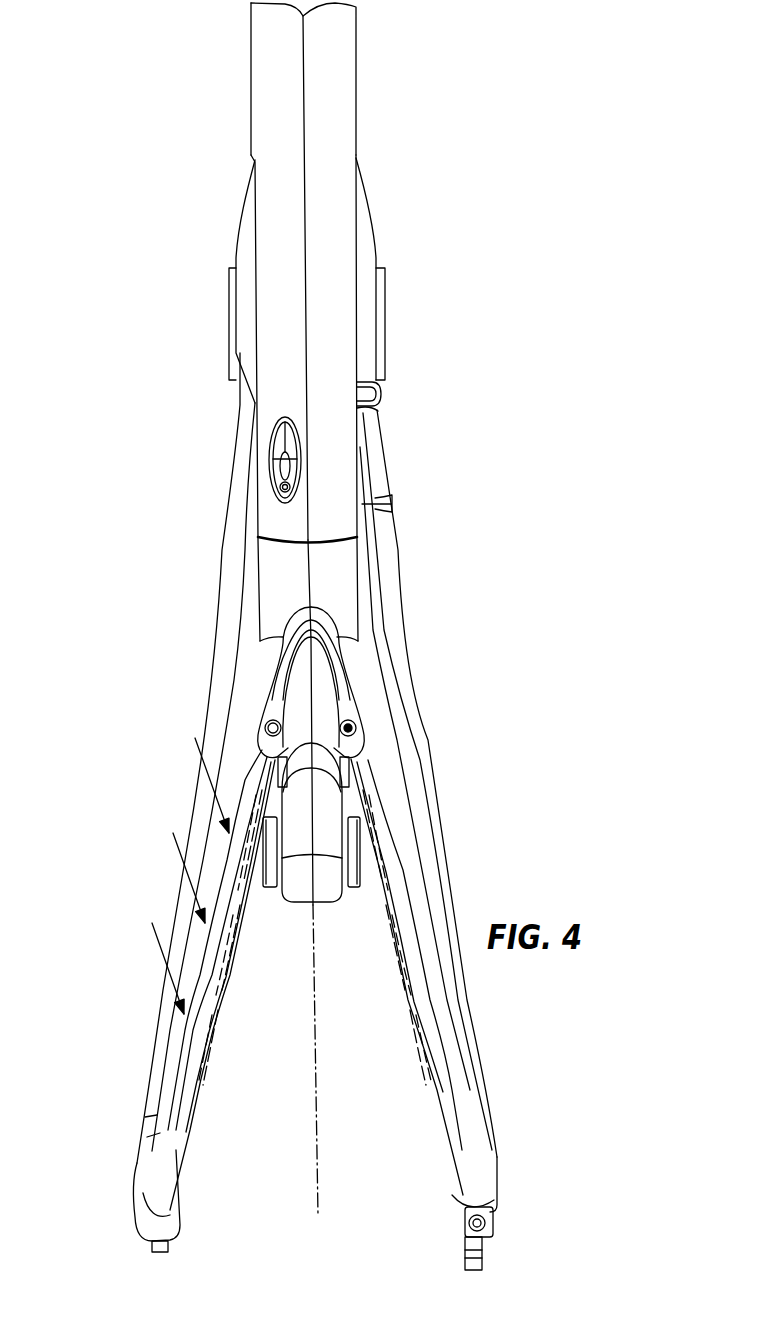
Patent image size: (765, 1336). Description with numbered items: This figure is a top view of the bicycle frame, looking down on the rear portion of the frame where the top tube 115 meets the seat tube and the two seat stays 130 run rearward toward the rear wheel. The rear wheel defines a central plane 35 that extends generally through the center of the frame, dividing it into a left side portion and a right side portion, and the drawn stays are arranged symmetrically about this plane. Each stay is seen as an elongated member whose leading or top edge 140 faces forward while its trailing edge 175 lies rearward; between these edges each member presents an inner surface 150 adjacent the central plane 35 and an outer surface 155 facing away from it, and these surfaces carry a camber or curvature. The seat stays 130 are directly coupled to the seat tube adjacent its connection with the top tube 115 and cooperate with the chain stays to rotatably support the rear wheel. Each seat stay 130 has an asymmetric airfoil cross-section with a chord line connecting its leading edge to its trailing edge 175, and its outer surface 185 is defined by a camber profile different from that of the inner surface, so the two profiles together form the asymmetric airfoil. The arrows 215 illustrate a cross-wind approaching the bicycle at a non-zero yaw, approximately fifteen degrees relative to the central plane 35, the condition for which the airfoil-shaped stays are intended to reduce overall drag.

The top tube 115 is at (340, 85).
The outer surface 155 is at (235, 575).
The leading or top edge 140 is at (232, 680).
The inner surface 150 is at (238, 727).
The trailing edge 175 is at (213, 1029).
The outer surface 185 is at (178, 1093).
The seat stays 130 is at (152, 1135).
The cross-wind 215 is at (195, 738).
The central plane 35 is at (318, 1189).